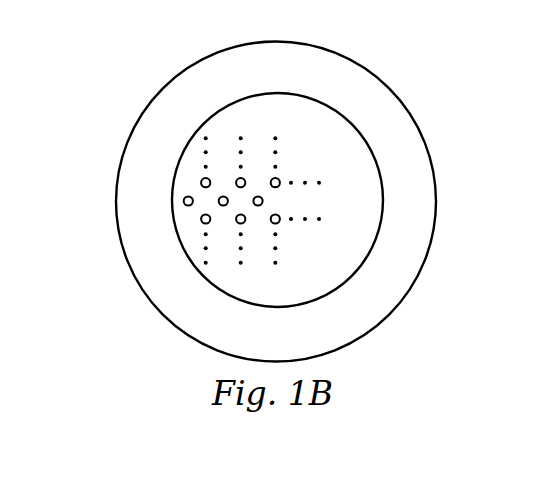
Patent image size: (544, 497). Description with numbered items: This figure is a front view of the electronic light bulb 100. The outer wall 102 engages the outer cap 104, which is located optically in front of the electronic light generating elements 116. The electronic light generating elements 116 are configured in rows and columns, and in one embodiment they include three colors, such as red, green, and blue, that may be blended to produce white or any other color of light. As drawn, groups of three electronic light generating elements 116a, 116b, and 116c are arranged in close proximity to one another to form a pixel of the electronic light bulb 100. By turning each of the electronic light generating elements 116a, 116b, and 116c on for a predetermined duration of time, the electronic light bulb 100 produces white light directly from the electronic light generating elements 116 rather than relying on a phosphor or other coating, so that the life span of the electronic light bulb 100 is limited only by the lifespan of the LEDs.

The electronic light bulb 100 is at (459, 152).
The outer wall 102 is at (397, 93).
The outer cap 104 is at (342, 67).
The electronic light generating elements 116 is at (224, 146).
The electronic light generating element 116a is at (201, 179).
The electronic light generating element 116b is at (183, 201).
The electronic light generating element 116c is at (200, 220).